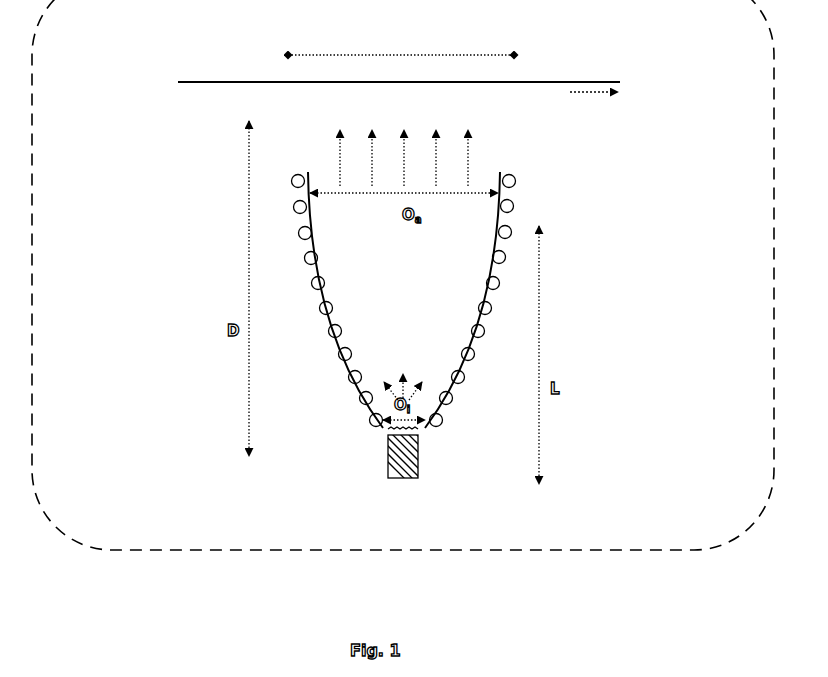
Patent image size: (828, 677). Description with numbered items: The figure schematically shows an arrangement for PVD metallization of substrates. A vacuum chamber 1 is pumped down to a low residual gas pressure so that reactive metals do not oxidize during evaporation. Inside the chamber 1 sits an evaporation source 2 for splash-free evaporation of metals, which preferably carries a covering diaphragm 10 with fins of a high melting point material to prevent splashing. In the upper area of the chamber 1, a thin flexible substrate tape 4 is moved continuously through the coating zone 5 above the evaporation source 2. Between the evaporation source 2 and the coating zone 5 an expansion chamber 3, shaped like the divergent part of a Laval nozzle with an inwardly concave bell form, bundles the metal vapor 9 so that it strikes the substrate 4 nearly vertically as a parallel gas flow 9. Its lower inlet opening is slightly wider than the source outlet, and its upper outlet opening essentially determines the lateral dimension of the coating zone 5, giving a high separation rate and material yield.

The vacuum chamber 1 is at (403, 275).
The evaporation source 2 is at (405, 451).
The expansion chamber 3 is at (404, 300).
The moving substrate tape 4 is at (399, 78).
The coating zone 5 is at (401, 46).
The metal vapor 9 is at (404, 158).
The diaphragm 10 is at (430, 433).